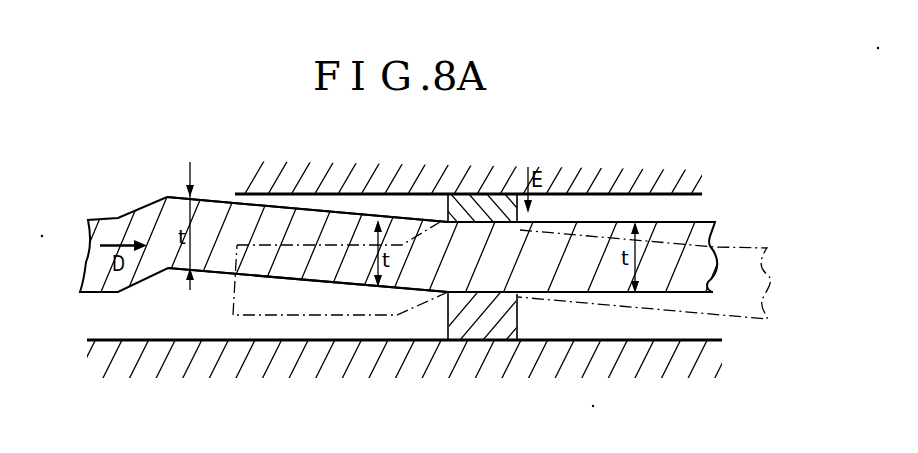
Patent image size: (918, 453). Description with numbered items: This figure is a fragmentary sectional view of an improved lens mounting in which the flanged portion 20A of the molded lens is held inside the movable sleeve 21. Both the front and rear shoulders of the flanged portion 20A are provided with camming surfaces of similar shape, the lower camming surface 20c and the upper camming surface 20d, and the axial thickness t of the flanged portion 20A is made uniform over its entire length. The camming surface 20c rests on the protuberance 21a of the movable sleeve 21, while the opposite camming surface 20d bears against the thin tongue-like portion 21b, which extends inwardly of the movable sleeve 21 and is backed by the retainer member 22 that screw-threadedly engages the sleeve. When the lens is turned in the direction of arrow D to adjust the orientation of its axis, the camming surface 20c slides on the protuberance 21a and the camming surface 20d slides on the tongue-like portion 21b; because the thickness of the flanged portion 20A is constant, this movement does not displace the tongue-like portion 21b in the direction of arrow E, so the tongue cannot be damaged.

The flanged portion 20A is at (210, 250).
The camming surface 20c is at (290, 284).
The camming surface 20d is at (258, 205).
The movable sleeve 21 is at (578, 346).
The protuberance 21a is at (488, 323).
The tongue-like portion 21b is at (484, 207).
The retainer member 22 is at (378, 178).